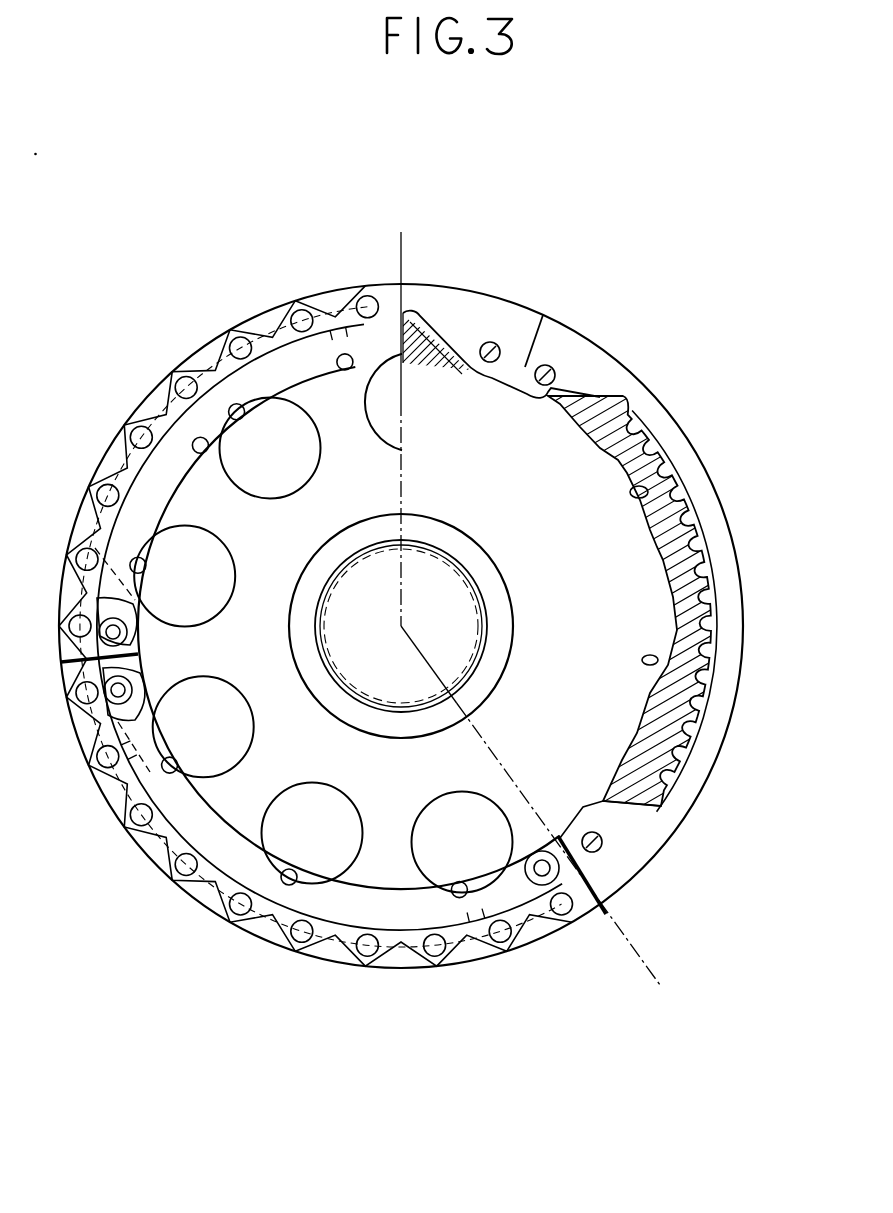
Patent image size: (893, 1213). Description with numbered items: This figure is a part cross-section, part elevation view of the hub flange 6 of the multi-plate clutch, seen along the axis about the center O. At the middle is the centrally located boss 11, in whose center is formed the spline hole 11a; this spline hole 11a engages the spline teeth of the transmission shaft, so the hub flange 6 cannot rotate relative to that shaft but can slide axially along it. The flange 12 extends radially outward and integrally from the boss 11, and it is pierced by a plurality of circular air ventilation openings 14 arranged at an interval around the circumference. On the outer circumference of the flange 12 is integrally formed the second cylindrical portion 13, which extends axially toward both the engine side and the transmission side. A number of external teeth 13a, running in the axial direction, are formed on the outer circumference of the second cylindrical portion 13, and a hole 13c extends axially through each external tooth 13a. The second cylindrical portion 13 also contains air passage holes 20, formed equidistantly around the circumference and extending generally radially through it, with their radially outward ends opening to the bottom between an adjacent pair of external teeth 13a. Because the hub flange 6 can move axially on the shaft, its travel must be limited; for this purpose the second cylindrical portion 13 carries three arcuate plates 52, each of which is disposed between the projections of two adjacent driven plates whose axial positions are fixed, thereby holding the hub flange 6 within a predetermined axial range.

The hub flange 6 is at (608, 243).
The boss 11 is at (355, 540).
The spline hole 11a is at (421, 560).
The flange 12 is at (240, 510).
The second cylindrical portion 13 is at (703, 527).
The external teeth 13a is at (302, 300).
The hole 13c is at (373, 287).
The circular air ventilation openings 14 is at (243, 407).
The air passage holes 20 is at (630, 493).
The arcuate plates 52 is at (102, 450).
The center of rotation O is at (401, 626).